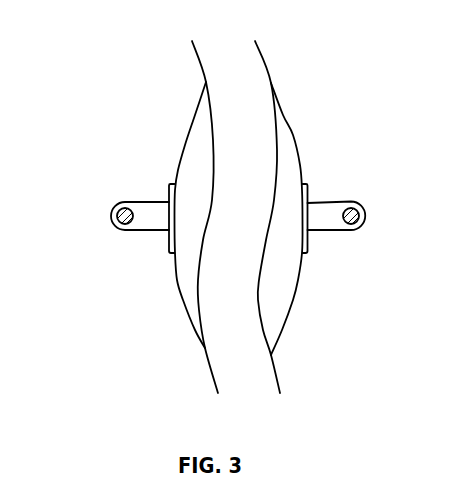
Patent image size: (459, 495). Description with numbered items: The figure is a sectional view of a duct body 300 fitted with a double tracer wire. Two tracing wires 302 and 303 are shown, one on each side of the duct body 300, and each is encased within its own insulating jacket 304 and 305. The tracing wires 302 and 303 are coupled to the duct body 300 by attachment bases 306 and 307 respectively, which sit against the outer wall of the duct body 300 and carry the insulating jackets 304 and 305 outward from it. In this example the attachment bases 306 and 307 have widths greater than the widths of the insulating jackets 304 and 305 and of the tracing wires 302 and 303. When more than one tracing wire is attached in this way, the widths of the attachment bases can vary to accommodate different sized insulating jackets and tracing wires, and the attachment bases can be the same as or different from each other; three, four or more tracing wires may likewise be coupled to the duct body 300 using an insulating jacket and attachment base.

The duct body 300 is at (293, 133).
The tracing wire 302 is at (357, 210).
The tracing wire 303 is at (120, 211).
The insulating jacket 304 is at (327, 225).
The insulating jacket 305 is at (145, 222).
The attachment base 306 is at (305, 251).
The attachment base 307 is at (168, 251).